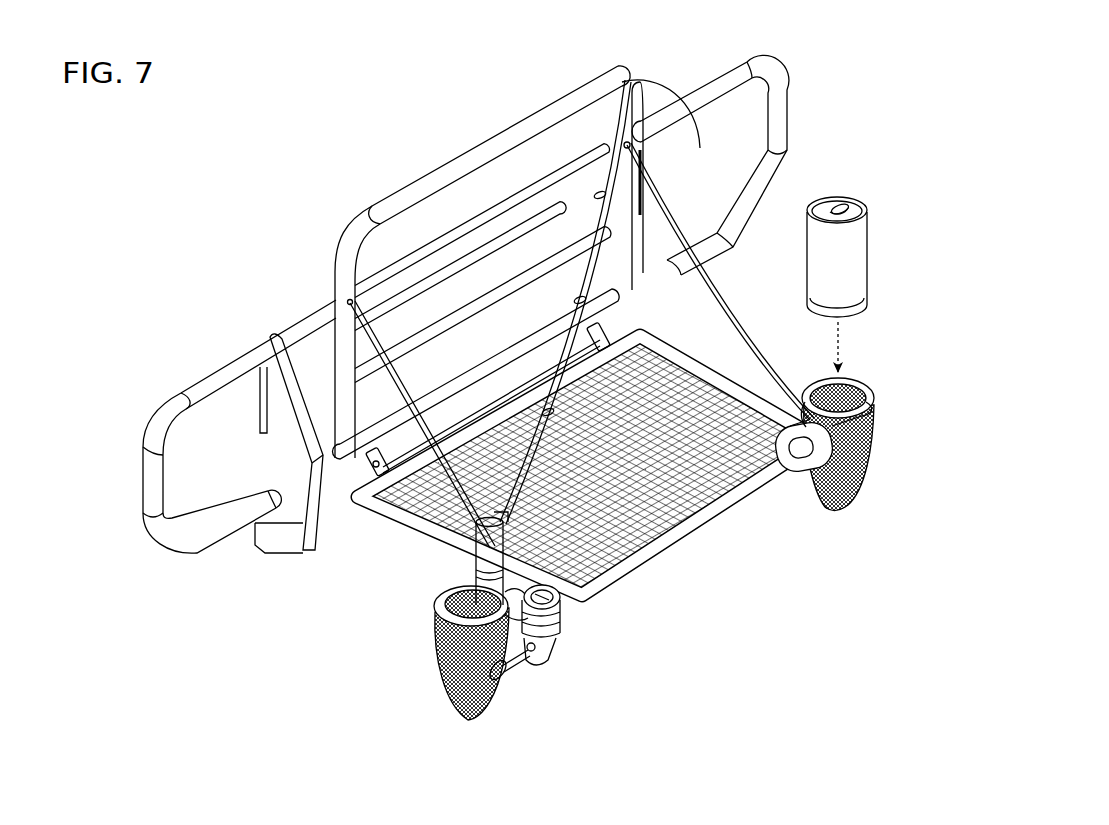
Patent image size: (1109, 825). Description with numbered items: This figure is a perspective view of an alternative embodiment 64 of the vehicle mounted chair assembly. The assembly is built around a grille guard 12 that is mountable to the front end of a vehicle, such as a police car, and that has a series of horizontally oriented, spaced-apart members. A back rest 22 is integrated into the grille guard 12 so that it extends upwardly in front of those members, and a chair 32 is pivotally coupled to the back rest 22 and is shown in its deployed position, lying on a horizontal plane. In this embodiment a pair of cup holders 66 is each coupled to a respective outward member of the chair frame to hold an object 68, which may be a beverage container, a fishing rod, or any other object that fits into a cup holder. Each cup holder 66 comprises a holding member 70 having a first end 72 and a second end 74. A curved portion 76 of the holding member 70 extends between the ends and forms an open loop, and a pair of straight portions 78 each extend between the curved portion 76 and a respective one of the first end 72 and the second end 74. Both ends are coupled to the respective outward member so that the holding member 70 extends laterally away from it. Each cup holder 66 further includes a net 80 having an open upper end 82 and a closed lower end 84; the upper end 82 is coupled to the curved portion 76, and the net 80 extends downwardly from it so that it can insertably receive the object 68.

The grille guard 12 is at (162, 362).
The back rest 22 is at (320, 260).
The chair 32 is at (718, 556).
The alternative embodiment 64 is at (458, 114).
The cup holder 66 is at (661, 488).
The object 68 is at (870, 258).
The holding member 70 is at (814, 362).
The first end 72 is at (812, 486).
The second end 74 is at (735, 362).
The curved portion 76 is at (843, 337).
The straight portion 78 is at (800, 420).
The net 80 is at (874, 433).
The upper end 82 is at (872, 408).
The lower end 84 is at (833, 510).